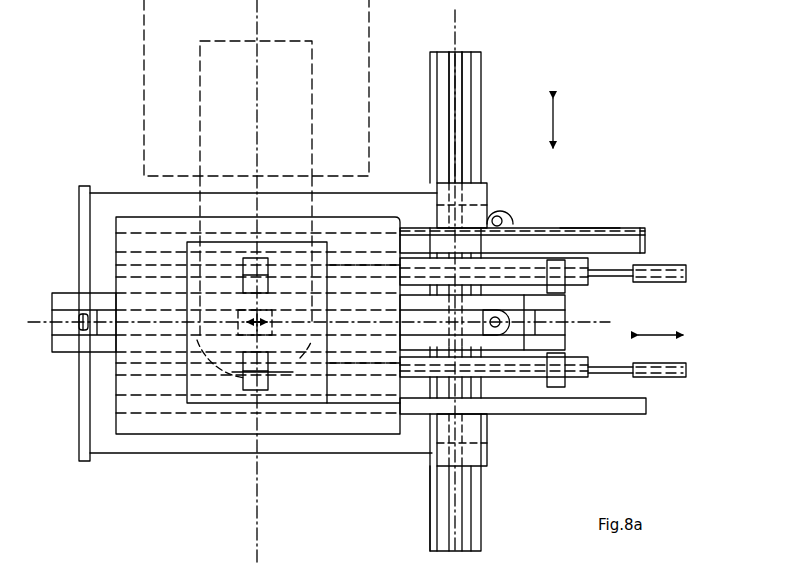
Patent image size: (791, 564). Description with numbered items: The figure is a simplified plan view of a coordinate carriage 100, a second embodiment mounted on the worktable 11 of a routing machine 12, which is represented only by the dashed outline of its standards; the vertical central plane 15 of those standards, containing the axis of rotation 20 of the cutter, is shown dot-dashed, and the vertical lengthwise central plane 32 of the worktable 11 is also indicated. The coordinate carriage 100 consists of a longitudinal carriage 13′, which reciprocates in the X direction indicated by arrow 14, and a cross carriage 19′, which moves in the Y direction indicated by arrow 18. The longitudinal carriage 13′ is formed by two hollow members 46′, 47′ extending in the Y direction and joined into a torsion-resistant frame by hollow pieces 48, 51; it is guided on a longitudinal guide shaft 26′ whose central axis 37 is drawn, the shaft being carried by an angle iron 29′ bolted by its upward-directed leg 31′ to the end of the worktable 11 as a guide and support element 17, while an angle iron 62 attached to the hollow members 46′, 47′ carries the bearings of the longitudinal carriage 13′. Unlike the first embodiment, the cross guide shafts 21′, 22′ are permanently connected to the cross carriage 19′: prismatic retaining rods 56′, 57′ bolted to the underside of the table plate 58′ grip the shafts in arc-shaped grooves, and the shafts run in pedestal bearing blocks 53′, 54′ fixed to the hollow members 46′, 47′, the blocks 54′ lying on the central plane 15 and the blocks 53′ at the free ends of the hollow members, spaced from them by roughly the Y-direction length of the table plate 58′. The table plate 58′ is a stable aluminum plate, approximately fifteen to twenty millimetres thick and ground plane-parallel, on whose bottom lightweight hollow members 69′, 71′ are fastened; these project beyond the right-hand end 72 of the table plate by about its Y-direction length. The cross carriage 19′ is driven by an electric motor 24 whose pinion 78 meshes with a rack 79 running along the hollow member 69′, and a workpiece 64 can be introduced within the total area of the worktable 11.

The routing machine 12 is at (142, 42).
The coordinate carriage 100 is at (143, 184).
The vertical central plane 15 is at (259, 120).
The axis of rotation of the cutter 20 is at (265, 330).
The central axis of guide shaft 37 is at (458, 42).
The longitudinal guide shaft 26′ is at (456, 102).
The pinion 78 is at (500, 205).
The electric drive motor 24 is at (503, 216).
The retaining rod 56′ is at (377, 262).
The end of table plate 72 is at (402, 222).
The hollow member 46′ is at (106, 297).
The rack 79 is at (593, 230).
The hollow member 69′ is at (620, 248).
The guide shaft 21′ is at (630, 268).
The hollow piece 51 is at (555, 316).
The Y-direction arrow 18 is at (661, 333).
The bearing block 53′ is at (560, 358).
The guide shaft 22′ is at (640, 380).
The hollow member 47′ is at (100, 358).
The hollow member 71′ is at (608, 406).
The angle iron 62 is at (490, 424).
The column lower part 29′ is at (483, 500).
The column edge 31′ is at (432, 520).
The bearing block 54′ is at (262, 392).
The hollow piece 48 is at (265, 335).
The worktable 11 is at (357, 445).
The retaining rod 57′ is at (375, 386).
The longitudinal carriage 13′ is at (107, 378).
The cross carriage 19′ is at (162, 437).
The table plate 58′ is at (205, 425).
The workpiece 64 is at (240, 410).
The guide and support element 17 is at (80, 434).
The vertical lengthwise central plane 32 is at (40, 316).
The X-direction arrow 14 is at (557, 118).